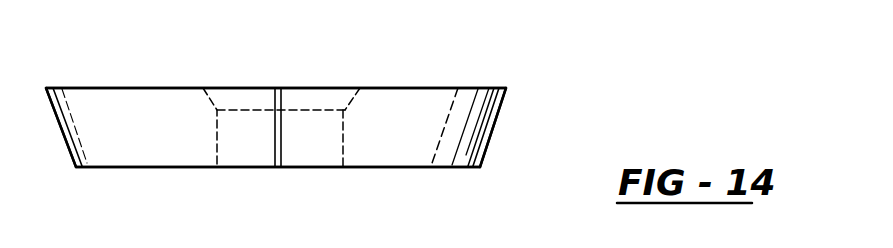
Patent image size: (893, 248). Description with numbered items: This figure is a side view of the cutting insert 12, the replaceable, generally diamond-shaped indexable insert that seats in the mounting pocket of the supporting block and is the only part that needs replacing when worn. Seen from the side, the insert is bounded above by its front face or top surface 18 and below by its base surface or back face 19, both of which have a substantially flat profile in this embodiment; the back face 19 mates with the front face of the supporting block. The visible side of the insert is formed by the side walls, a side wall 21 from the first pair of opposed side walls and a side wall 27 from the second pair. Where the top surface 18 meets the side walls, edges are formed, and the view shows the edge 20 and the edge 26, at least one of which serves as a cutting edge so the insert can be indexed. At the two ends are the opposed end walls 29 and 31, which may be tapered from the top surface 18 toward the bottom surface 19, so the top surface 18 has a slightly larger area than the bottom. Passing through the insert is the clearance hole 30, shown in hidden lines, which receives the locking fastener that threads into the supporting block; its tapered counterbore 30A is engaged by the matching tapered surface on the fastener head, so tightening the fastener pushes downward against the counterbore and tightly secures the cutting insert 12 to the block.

The cutting insert 12 is at (477, 72).
The top surface 18 is at (181, 88).
The back face 19 is at (195, 168).
The edge 20 is at (419, 88).
The side wall 21 is at (398, 140).
The edge 26 is at (113, 88).
The side wall 27 is at (130, 132).
The end wall 29 is at (65, 130).
The clearance hole 30 is at (345, 123).
The tapered counterbore 30A is at (353, 99).
The end wall 31 is at (500, 108).